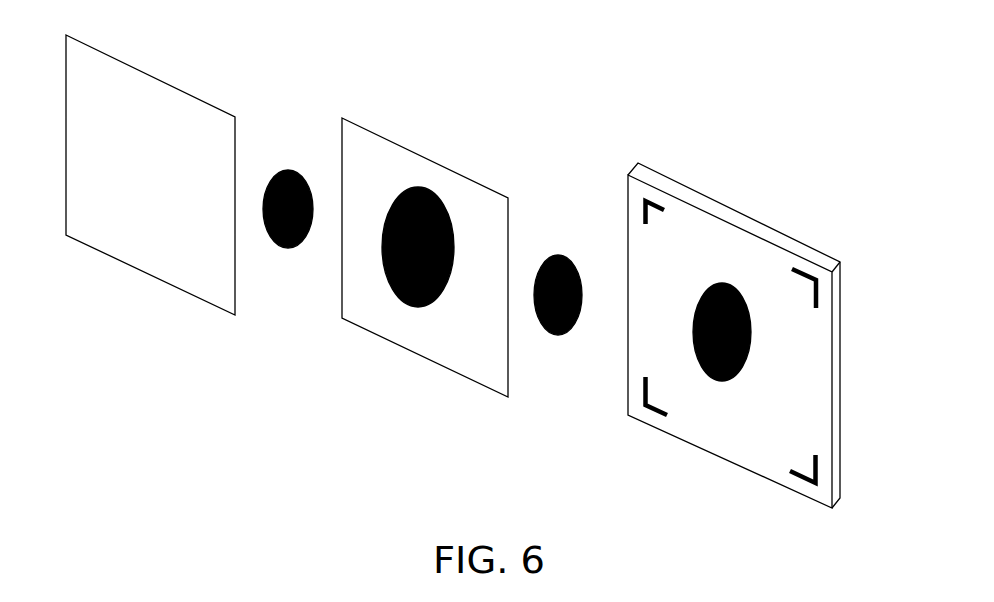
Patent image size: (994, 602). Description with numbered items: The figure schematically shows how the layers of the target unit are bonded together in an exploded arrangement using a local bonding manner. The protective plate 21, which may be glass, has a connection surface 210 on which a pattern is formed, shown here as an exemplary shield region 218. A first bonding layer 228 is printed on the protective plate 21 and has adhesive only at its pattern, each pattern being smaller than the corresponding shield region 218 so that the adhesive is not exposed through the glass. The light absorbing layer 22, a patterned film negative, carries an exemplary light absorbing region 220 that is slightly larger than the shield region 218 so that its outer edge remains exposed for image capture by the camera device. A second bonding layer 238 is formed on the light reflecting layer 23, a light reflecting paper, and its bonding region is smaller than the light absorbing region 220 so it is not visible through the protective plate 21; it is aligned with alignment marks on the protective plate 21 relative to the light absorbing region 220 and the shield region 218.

The light reflecting layer 23 is at (166, 110).
The second bonding layer 238 is at (283, 170).
The light absorbing layer 22 is at (362, 138).
The light absorbing region 220 is at (423, 187).
The first bonding layer 228 is at (550, 257).
The protective plate 21 is at (652, 180).
The connection surface 210 is at (745, 248).
The shield region 218 is at (752, 340).